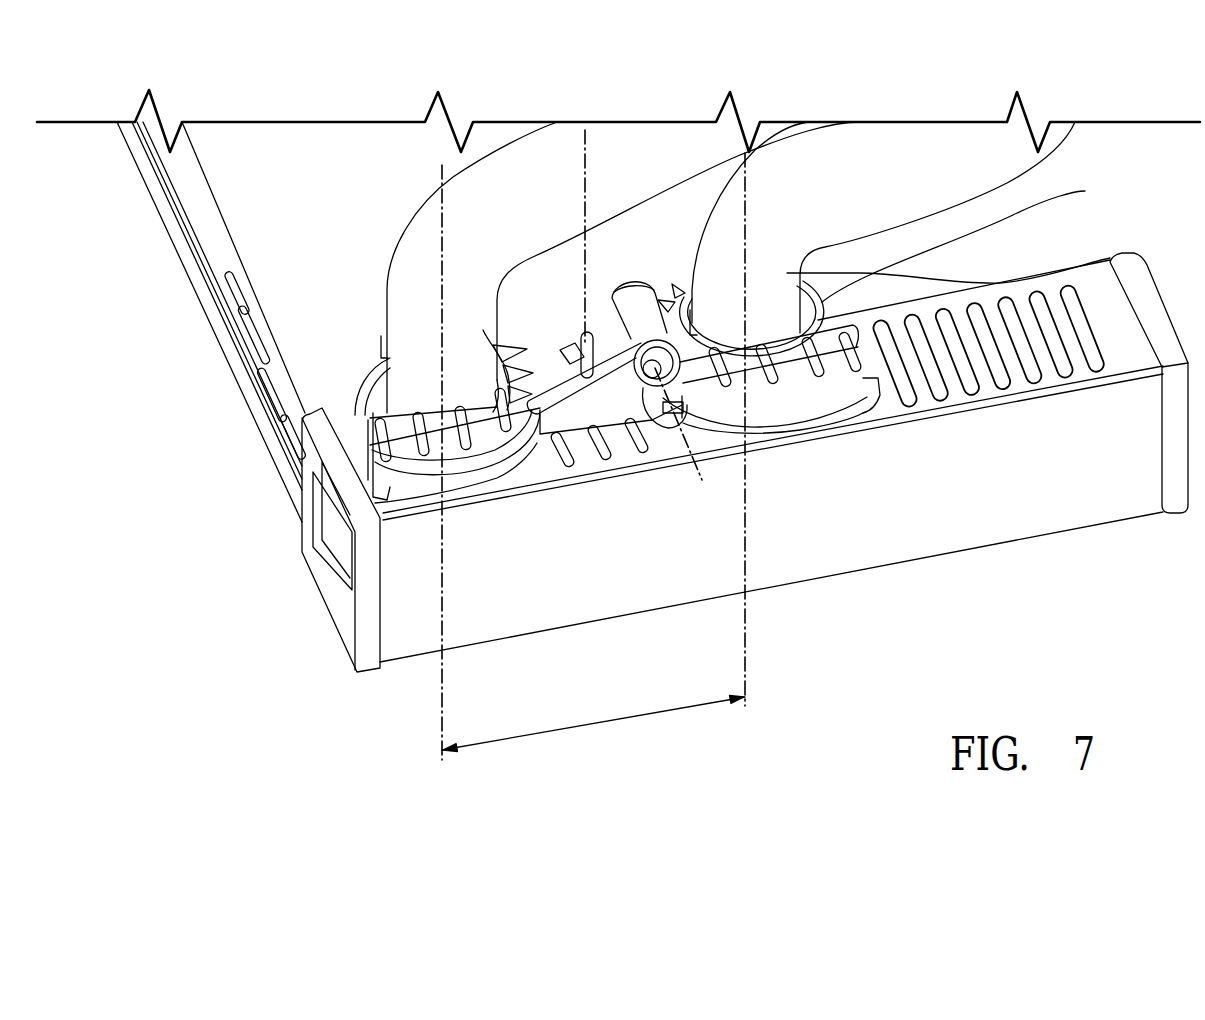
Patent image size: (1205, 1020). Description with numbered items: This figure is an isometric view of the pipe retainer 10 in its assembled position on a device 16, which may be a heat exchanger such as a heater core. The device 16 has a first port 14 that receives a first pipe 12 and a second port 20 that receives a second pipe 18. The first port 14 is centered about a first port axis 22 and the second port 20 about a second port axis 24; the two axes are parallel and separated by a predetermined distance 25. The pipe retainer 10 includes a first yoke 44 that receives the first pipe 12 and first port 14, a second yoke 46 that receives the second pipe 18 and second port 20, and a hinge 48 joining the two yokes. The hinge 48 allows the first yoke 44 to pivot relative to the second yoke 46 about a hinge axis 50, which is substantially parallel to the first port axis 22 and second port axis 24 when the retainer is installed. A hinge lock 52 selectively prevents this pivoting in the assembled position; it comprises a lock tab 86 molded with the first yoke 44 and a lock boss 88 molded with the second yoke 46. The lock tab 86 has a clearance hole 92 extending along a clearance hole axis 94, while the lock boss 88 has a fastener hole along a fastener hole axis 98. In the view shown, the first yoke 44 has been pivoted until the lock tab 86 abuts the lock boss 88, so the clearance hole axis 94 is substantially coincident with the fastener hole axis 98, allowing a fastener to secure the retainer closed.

The pipe retainer 10 is at (587, 447).
The first pipe 12 is at (400, 312).
The first port 14 is at (358, 404).
The device 16 is at (398, 632).
The second pipe 18 is at (1085, 191).
The second port 20 is at (995, 282).
The first port axis 22 is at (442, 215).
The second port axis 24 is at (750, 203).
The predetermined distance 25 is at (597, 723).
The first yoke 44 is at (505, 466).
The second yoke 46 is at (818, 408).
The hinge 48 is at (587, 335).
The hinge axis 50 is at (587, 143).
The hinge lock 52 is at (651, 275).
The lock tab 86 is at (553, 343).
The lock boss 88 is at (630, 293).
The clearance hole 92 is at (655, 385).
The clearance hole axis 94 is at (683, 470).
The fastener hole axis 98 is at (678, 424).